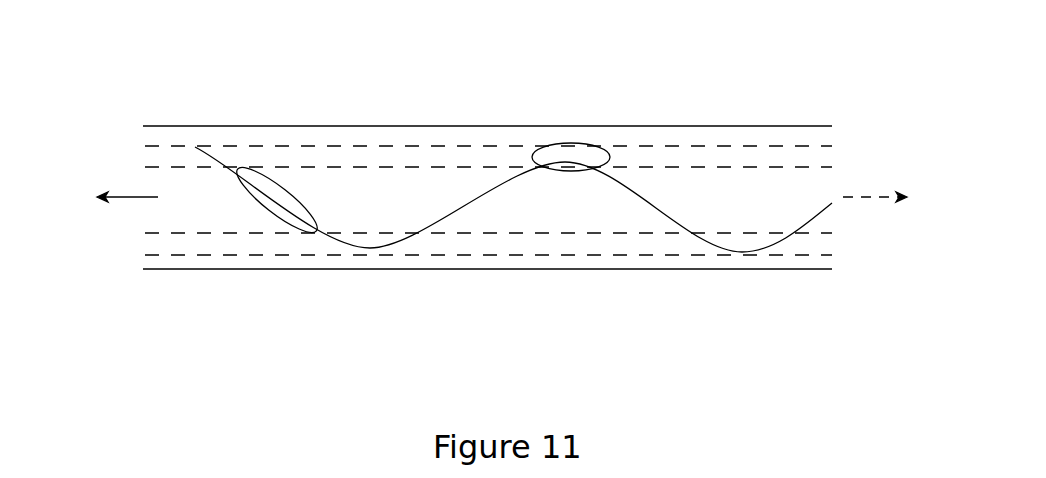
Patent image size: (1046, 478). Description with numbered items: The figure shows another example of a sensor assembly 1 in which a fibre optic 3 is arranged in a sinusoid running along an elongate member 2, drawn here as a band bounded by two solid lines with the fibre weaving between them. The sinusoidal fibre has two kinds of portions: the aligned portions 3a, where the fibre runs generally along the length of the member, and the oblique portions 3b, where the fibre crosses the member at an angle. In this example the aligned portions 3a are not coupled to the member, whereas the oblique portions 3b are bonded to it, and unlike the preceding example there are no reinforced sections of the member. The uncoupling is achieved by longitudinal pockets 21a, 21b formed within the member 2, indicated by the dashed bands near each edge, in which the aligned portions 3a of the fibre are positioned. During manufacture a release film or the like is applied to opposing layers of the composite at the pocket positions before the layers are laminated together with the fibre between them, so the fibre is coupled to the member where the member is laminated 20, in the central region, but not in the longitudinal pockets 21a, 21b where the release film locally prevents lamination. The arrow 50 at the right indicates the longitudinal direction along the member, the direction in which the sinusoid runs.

The sensor assembly 1 is at (816, 35).
The member 2 is at (798, 287).
The fibre optic 3 is at (480, 202).
The aligned portions 3a is at (580, 146).
The oblique portions 3b is at (270, 218).
The laminated region 20 is at (333, 175).
The longitudinal pocket 21a is at (440, 153).
The longitudinal pocket 21b is at (450, 245).
The machine direction 50 is at (875, 184).